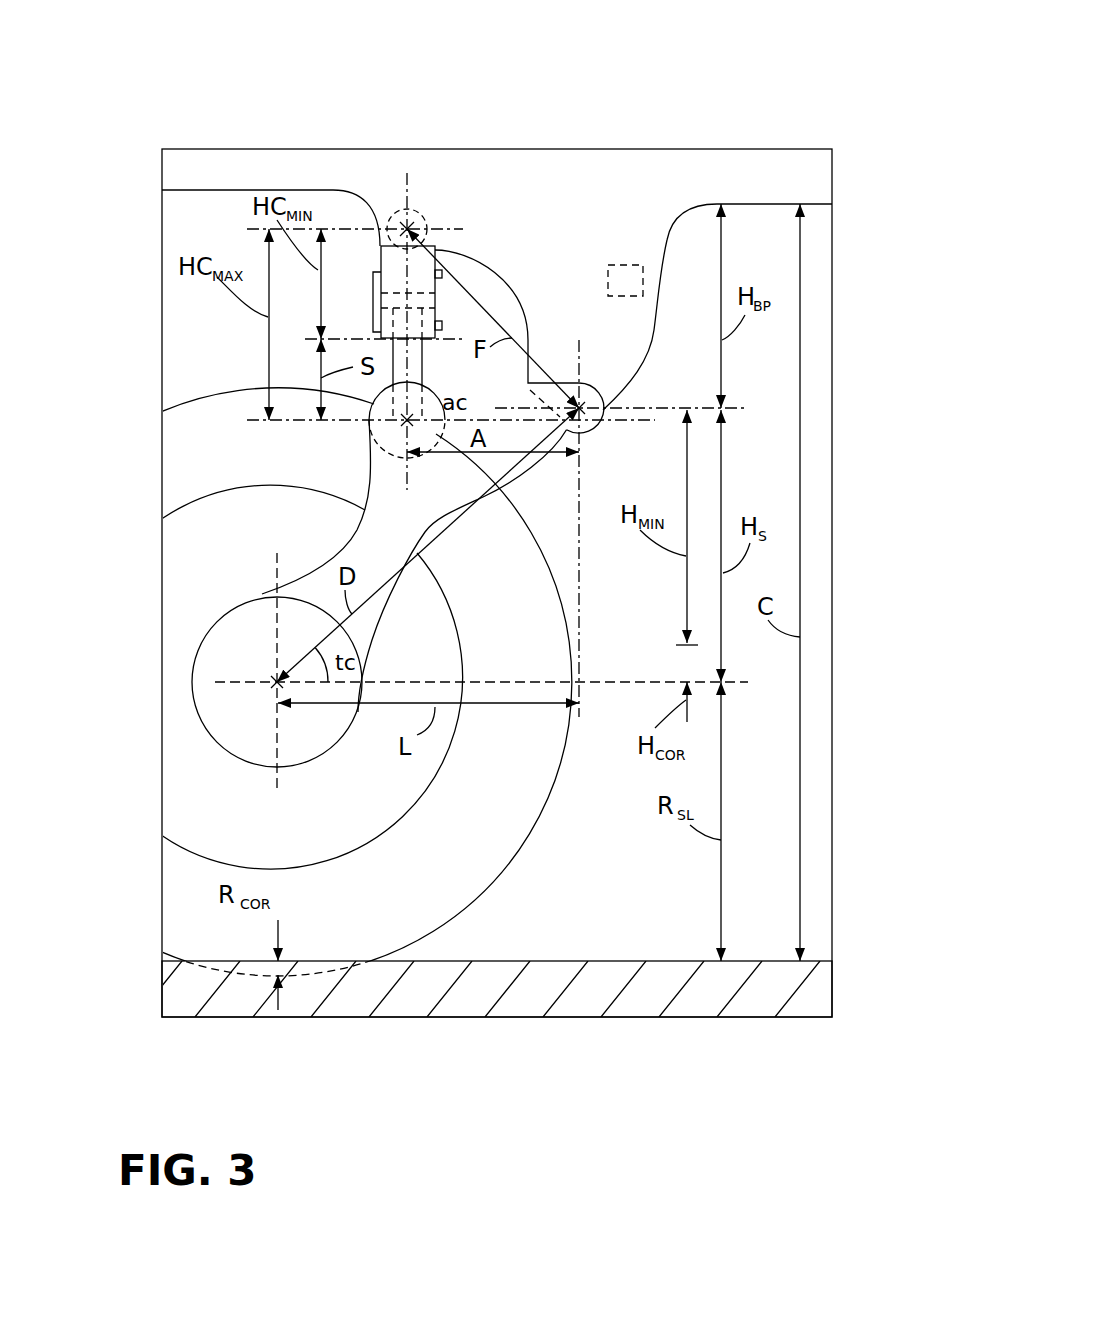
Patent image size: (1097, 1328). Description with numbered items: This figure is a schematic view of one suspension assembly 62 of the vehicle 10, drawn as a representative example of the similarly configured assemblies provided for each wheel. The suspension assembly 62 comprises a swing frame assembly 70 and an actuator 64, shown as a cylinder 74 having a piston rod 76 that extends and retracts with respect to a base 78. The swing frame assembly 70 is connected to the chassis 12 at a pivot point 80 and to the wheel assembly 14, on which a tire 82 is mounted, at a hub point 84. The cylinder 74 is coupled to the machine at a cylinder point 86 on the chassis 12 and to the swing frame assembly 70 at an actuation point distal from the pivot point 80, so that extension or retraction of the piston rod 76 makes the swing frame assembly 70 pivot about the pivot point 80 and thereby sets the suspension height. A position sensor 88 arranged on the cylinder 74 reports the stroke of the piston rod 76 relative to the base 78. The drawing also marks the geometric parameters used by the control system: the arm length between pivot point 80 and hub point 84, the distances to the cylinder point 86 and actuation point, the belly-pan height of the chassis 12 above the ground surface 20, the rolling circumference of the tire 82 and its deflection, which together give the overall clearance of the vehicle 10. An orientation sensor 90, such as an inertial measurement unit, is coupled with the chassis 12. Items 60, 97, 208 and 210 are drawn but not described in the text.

The vehicle 10 is at (678, 75).
The chassis 12 is at (648, 197).
The wheel assembly 14 is at (200, 796).
The ground surface 20 is at (627, 961).
The drive mechanism 60 is at (226, 125).
The suspension assembly 62 is at (538, 255).
The actuator 64 is at (458, 245).
The swing frame assembly 70 is at (410, 532).
The cylinder 74 is at (365, 252).
The piston rod 76 is at (409, 357).
The base 78 is at (423, 287).
The pivot point 80 is at (587, 400).
The tire 82 is at (448, 888).
The hub point 84 is at (277, 682).
The cylinder point 86 is at (410, 225).
The position sensor 88 is at (375, 318).
The orientation sensor 90 is at (625, 265).
The contact point 97 is at (403, 423).
The upper fastener 208 is at (443, 290).
The lower fastener 210 is at (443, 325).